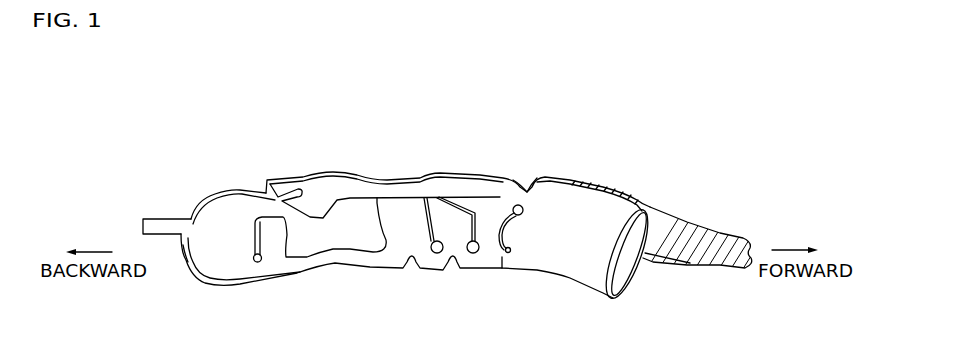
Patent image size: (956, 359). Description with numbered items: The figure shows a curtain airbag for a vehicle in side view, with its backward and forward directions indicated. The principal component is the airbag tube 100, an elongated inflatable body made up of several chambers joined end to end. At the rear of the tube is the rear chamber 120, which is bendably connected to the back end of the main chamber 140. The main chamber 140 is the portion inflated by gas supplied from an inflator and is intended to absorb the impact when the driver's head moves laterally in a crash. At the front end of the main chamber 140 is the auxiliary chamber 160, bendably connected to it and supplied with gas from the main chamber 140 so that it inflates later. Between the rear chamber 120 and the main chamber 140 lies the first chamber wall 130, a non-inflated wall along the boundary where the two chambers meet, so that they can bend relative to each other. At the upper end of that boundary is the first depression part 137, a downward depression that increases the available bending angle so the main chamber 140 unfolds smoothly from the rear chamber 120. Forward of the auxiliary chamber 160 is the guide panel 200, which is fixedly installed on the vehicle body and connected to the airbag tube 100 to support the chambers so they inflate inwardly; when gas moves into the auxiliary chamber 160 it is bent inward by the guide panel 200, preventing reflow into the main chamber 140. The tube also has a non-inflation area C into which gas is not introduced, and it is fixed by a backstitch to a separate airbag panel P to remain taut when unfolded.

The airbag tube 100 is at (427, 163).
The rear chamber 120 is at (242, 210).
The first chamber wall 130 is at (497, 203).
The first depression part 137 is at (527, 190).
The main chamber 140 is at (587, 207).
The auxiliary chamber 160 is at (630, 288).
The guide panel 200 is at (683, 222).
The airbag panel P is at (190, 243).
The non-inflation area C is at (325, 234).